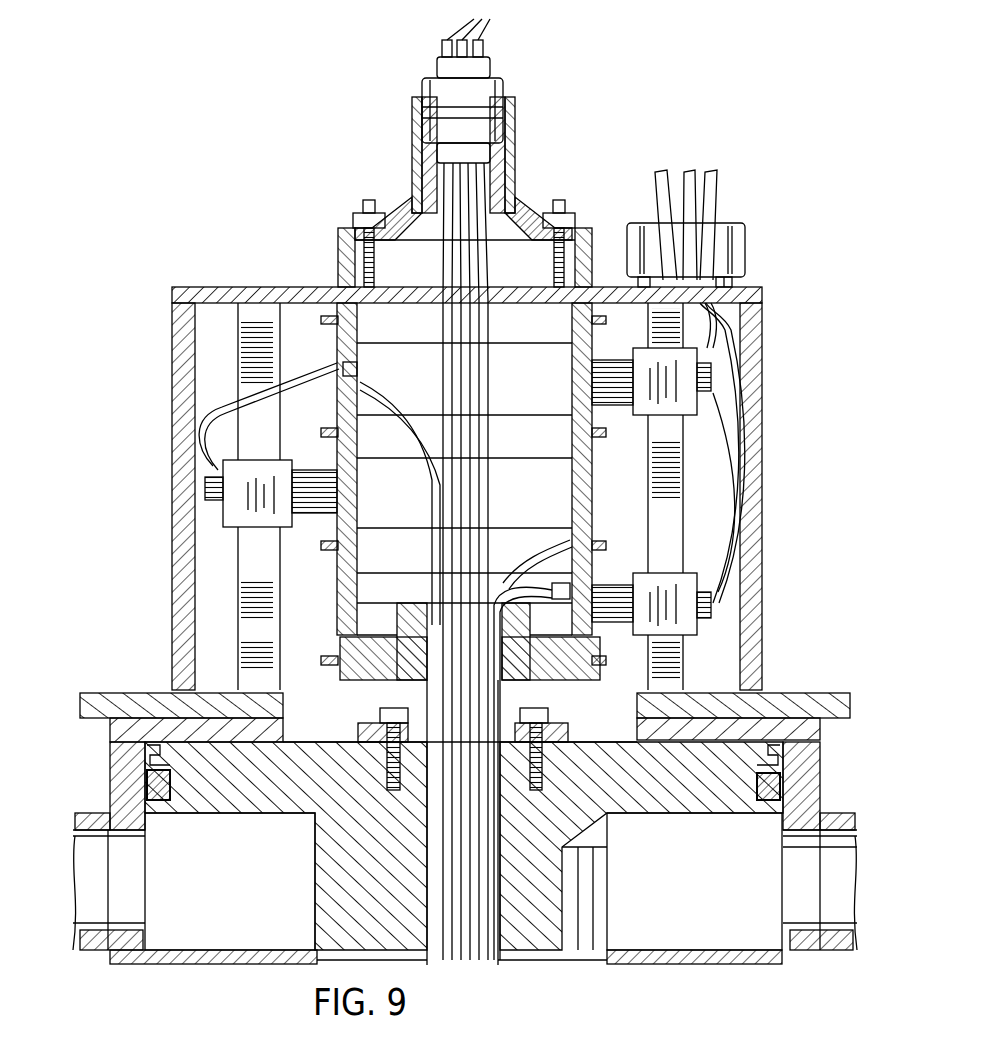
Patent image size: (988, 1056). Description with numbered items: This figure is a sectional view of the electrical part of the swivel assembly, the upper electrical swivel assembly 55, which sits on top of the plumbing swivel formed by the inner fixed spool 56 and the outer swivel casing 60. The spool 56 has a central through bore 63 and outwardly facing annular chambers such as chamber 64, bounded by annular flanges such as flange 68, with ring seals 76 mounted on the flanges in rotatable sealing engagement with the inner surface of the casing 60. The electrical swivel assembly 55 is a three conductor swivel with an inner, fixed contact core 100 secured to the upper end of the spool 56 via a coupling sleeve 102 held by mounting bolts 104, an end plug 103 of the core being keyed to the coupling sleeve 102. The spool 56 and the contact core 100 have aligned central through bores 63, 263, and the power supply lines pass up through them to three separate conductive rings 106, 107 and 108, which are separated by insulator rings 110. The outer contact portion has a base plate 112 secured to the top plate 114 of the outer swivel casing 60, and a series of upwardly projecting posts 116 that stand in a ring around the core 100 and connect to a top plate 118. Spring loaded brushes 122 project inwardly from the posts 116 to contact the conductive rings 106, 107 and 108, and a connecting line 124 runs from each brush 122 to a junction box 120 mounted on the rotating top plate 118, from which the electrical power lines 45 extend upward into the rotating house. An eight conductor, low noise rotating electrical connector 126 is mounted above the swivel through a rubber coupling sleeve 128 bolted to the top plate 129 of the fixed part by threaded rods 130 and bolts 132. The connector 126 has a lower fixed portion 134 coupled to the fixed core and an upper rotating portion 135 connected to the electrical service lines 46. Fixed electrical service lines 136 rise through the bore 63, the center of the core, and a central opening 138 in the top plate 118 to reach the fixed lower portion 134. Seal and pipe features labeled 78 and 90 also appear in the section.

The electrical service lines 46 is at (476, 20).
The upper rotating portion 135 is at (440, 62).
The rotating electrical connector 126 is at (514, 63).
The lower fixed portion 134 is at (493, 128).
The electrical power lines 45 is at (660, 172).
The bolts 132 is at (365, 205).
The rubber coupling sleeve 128 is at (583, 230).
The junction box 120 is at (733, 233).
The threaded rods 130 is at (360, 256).
The central opening 138 is at (448, 288).
The top plate 118 is at (750, 291).
The top plate 129 is at (407, 300).
The insulator rings 110 is at (330, 322).
The fixed electrical service lines 136 is at (470, 322).
The connecting line 124 is at (152, 381).
The conductive ring 106 is at (580, 358).
The spring loaded brushes 122 is at (603, 383).
The central bore 263 is at (402, 390).
The electrical swivel assembly 55 is at (770, 405).
The contact core 100 is at (612, 465).
The conductive ring 107 is at (352, 492).
The posts 116 is at (673, 507).
The conductive ring 108 is at (348, 607).
The end plug 103 is at (340, 631).
The base plate 112 is at (720, 705).
The mounting bolts 104 is at (373, 712).
The coupling sleeve 102 is at (557, 723).
The outer swivel casing 60 is at (122, 778).
The top plate 114 is at (813, 730).
The ring seals 76 is at (187, 808).
The annular flange 68 is at (680, 797).
The inner fixed spool 56 is at (318, 893).
The annular chamber 64 is at (690, 913).
The seal 78 is at (628, 956).
The pipe 90 is at (88, 947).
The central through bore 63 is at (443, 940).